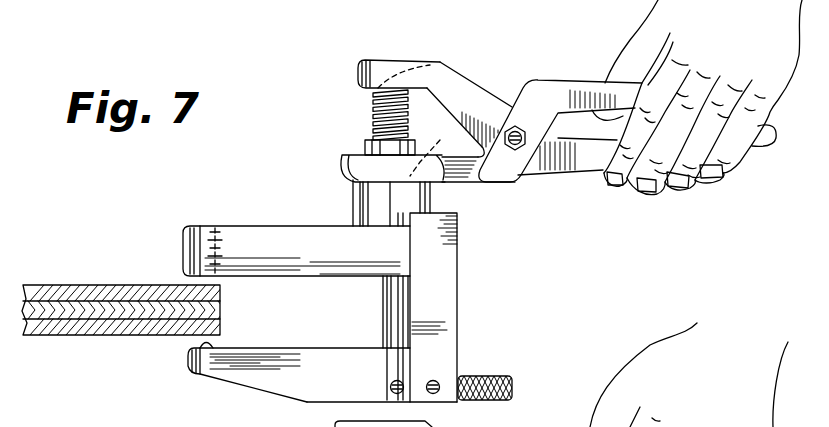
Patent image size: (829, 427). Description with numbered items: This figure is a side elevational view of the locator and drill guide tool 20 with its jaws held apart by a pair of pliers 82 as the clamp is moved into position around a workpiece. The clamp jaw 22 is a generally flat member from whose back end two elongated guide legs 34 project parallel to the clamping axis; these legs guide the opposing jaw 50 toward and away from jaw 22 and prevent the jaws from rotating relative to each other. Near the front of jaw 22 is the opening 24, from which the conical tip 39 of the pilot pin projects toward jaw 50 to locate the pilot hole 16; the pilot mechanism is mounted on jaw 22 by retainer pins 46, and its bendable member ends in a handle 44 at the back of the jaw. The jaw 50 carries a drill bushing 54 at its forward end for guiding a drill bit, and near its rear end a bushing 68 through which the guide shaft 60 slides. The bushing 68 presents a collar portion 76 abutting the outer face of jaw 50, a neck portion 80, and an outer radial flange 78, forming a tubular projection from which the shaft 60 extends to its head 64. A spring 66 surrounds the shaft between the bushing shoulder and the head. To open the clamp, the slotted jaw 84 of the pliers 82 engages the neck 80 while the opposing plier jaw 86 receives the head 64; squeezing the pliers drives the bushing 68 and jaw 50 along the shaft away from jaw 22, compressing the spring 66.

The pilot hole 16 is at (52, 333).
The locator and drill guide tool 20 is at (467, 306).
The clamp jaw 22 is at (283, 392).
The opening 24 is at (458, 426).
The guide legs 34 is at (445, 268).
The conical tip 39 is at (218, 347).
The handle 44 is at (510, 384).
The retainer pins 46 is at (433, 381).
The jaw 50 is at (242, 226).
The drill bushing 54 is at (185, 250).
The guide shaft 60 is at (383, 306).
The head 64 is at (435, 63).
The spring 66 is at (373, 105).
The bushing 68 is at (442, 198).
The collar portion 76 is at (403, 222).
The outer radial flange 78 is at (365, 145).
The neck portion 80 is at (467, 146).
The pliers 82 is at (557, 180).
The slotted jaw 84 is at (342, 162).
The jaw 86 is at (358, 72).